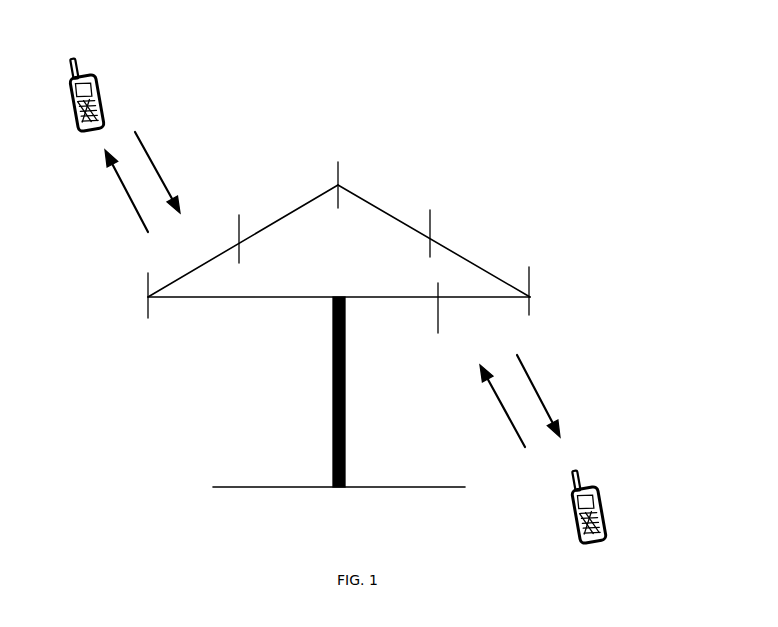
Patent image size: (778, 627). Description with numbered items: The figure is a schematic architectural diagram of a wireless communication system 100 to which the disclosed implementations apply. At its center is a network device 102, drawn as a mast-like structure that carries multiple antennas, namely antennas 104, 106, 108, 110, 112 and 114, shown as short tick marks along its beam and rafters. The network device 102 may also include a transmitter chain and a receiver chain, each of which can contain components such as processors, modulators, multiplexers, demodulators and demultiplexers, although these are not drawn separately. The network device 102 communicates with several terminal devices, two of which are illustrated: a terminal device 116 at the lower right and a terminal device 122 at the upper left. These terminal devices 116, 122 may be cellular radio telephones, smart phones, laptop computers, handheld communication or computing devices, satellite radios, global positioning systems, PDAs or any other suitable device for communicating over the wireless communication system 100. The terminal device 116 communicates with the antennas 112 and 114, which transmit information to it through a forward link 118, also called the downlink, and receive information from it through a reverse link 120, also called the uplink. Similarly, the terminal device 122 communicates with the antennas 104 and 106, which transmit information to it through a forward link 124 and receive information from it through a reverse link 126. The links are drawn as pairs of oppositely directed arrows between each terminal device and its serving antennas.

The wireless communication system 100 is at (485, 65).
The network device 102 is at (345, 432).
The antenna 104 is at (148, 307).
The antenna 106 is at (240, 252).
The antenna 108 is at (340, 173).
The antenna 110 is at (432, 225).
The antenna 112 is at (530, 280).
The antenna 114 is at (438, 320).
The terminal device 116 is at (608, 500).
The forward link 118 is at (530, 378).
The reverse link 120 is at (512, 430).
The terminal device 122 is at (104, 82).
The forward link 124 is at (130, 202).
The reverse link 126 is at (150, 152).